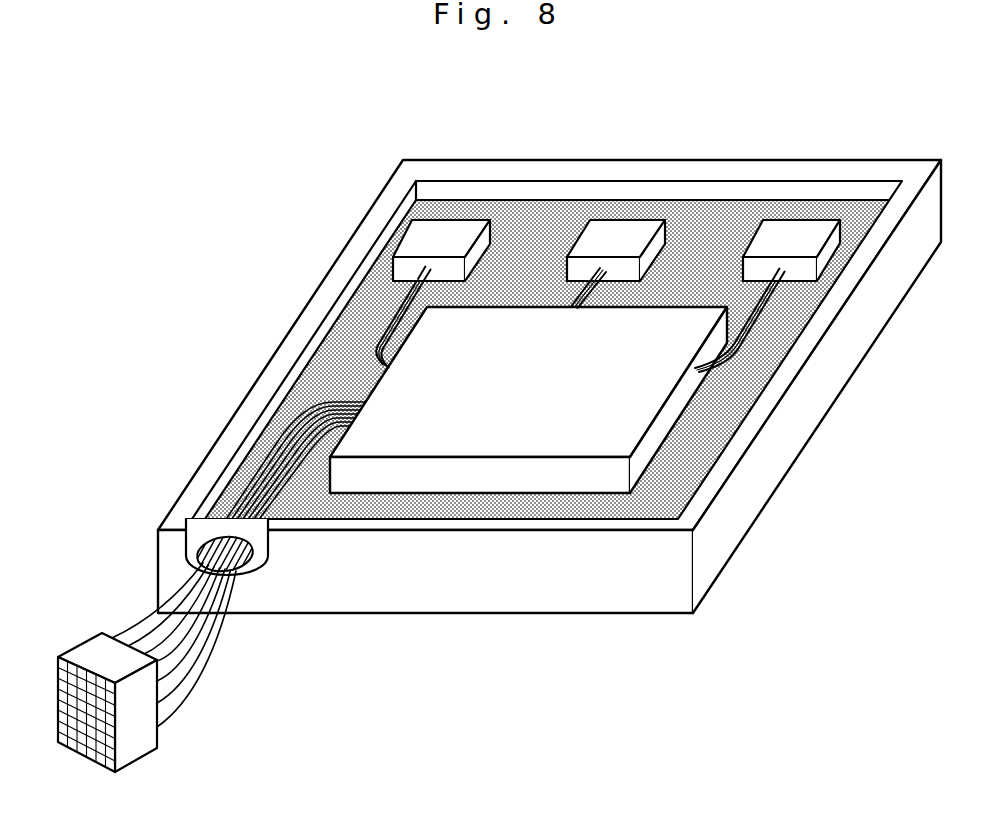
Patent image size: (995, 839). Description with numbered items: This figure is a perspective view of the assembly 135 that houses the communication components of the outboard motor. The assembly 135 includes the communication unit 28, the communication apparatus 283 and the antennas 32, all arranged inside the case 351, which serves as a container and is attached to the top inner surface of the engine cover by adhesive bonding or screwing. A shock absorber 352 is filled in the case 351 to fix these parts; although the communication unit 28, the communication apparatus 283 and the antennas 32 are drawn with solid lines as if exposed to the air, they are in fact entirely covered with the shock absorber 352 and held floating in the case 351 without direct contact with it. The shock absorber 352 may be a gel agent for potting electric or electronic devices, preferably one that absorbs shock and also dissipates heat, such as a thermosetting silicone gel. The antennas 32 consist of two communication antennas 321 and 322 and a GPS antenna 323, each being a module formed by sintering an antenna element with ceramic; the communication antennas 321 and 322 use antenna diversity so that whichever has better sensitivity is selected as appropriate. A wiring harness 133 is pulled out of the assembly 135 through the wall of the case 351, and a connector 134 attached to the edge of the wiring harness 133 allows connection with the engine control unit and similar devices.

The assembly 135 is at (290, 263).
The case 351 is at (493, 593).
The shock absorber 352 is at (670, 472).
The antennas 32 is at (852, 88).
The communication antenna 321 is at (449, 237).
The communication antenna 322 is at (800, 235).
The GPS antenna 323 is at (617, 233).
The communication unit 28 is at (428, 387).
The communication apparatus 283 is at (528, 400).
The wiring harness 133 is at (205, 658).
The connector 134 is at (137, 740).